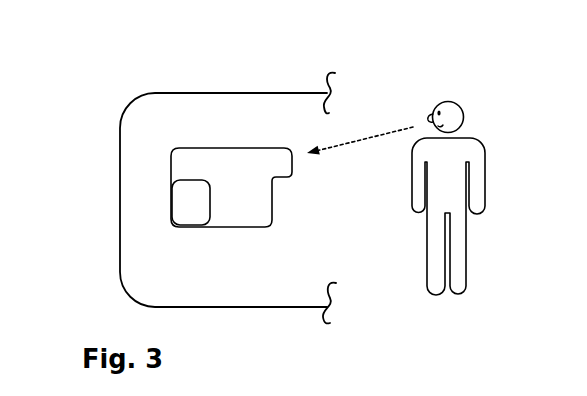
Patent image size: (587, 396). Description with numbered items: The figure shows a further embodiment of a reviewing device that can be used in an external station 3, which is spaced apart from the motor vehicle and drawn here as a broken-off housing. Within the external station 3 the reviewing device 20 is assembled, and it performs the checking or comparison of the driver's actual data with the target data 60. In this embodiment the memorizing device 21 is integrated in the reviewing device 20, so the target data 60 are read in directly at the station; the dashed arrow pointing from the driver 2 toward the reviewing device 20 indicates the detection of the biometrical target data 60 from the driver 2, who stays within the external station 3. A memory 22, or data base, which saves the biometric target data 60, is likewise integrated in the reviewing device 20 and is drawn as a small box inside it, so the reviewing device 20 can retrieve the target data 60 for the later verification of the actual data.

The external station 3 is at (104, 158).
The reviewing device 20 is at (257, 200).
The memorizing device 21 is at (281, 157).
The memory 22 is at (207, 217).
The target data 60 is at (390, 131).
The driver 2 is at (458, 251).